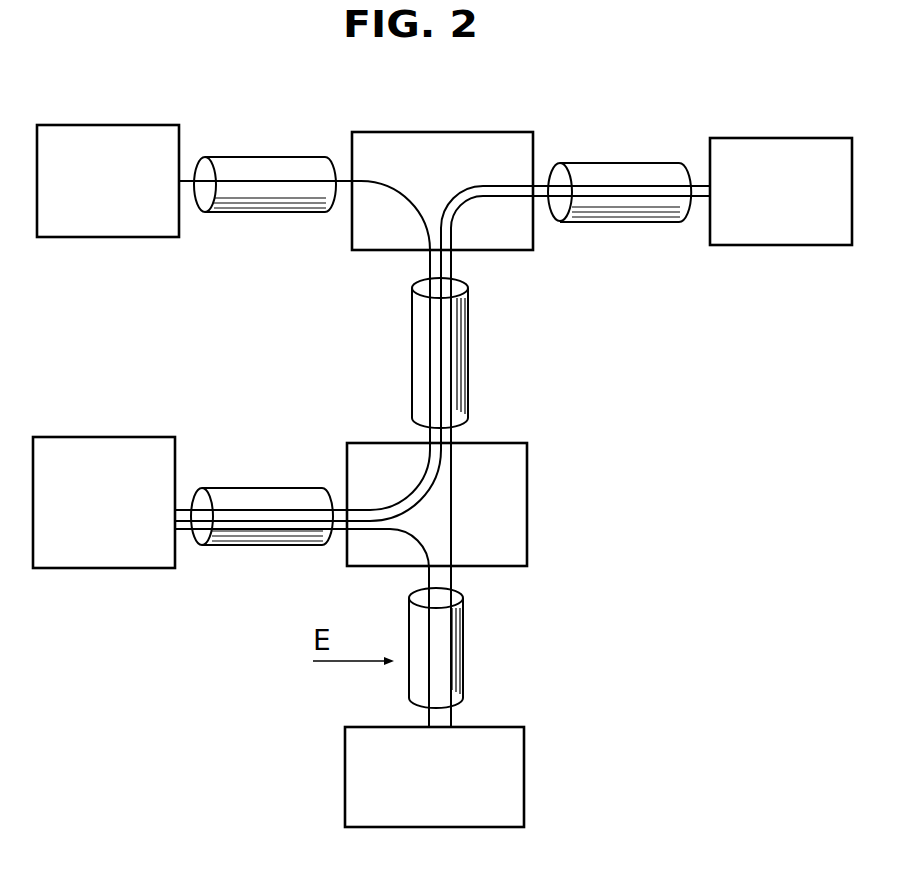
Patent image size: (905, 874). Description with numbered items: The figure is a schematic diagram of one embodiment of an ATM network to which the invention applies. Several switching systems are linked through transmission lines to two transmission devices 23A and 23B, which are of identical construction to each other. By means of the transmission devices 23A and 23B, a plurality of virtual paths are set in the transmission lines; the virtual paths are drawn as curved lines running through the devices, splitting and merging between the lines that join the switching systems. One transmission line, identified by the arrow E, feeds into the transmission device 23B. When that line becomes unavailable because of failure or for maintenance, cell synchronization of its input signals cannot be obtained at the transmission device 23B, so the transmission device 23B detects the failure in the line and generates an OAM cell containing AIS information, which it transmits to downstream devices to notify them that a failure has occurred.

The transmission device 23A is at (463, 132).
The transmission device 23B is at (527, 488).